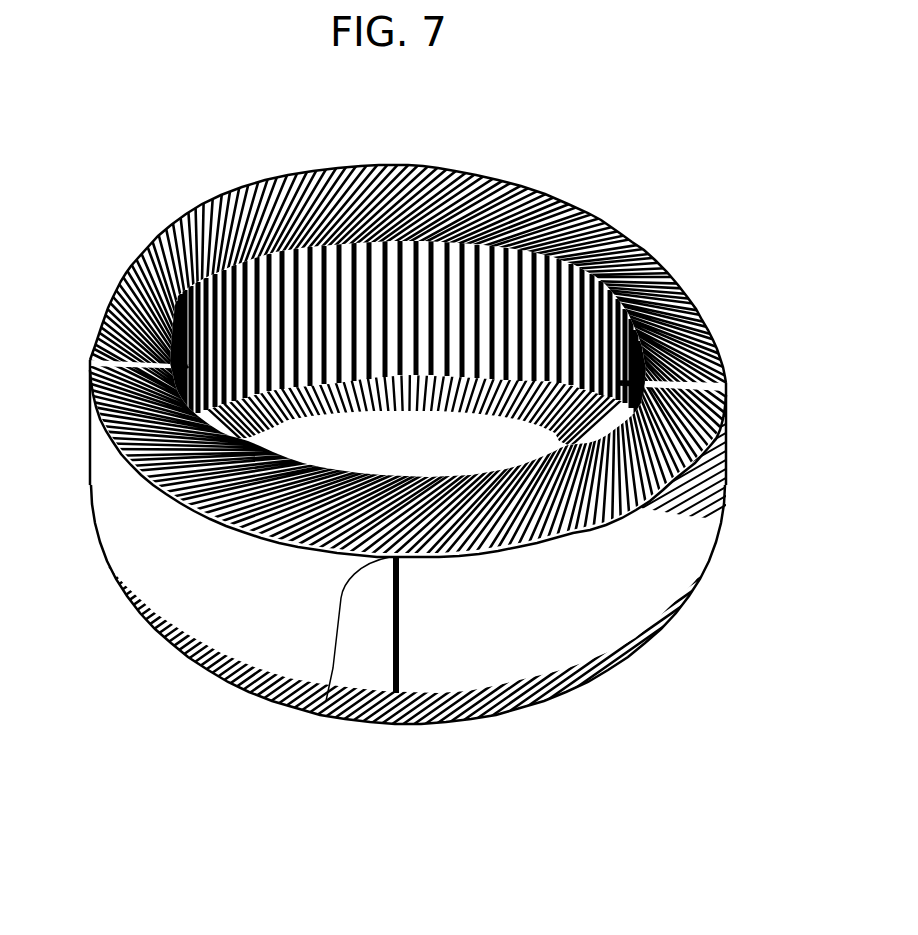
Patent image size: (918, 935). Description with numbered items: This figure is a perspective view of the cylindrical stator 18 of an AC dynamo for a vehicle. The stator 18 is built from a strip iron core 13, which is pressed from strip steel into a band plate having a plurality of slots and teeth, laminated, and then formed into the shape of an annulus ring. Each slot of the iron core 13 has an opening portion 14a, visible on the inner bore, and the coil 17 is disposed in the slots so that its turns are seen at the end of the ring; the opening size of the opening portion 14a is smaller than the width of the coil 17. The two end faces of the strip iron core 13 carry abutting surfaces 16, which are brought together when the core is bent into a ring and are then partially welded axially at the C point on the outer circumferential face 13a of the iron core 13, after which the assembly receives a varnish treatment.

The strip iron core 13 is at (718, 373).
The outer circumferential face 13a is at (190, 592).
The opening portion 14a is at (393, 280).
The abutting surface 16 is at (313, 700).
The coil 17 is at (678, 258).
The stator 18 is at (624, 186).
The C point C is at (388, 634).